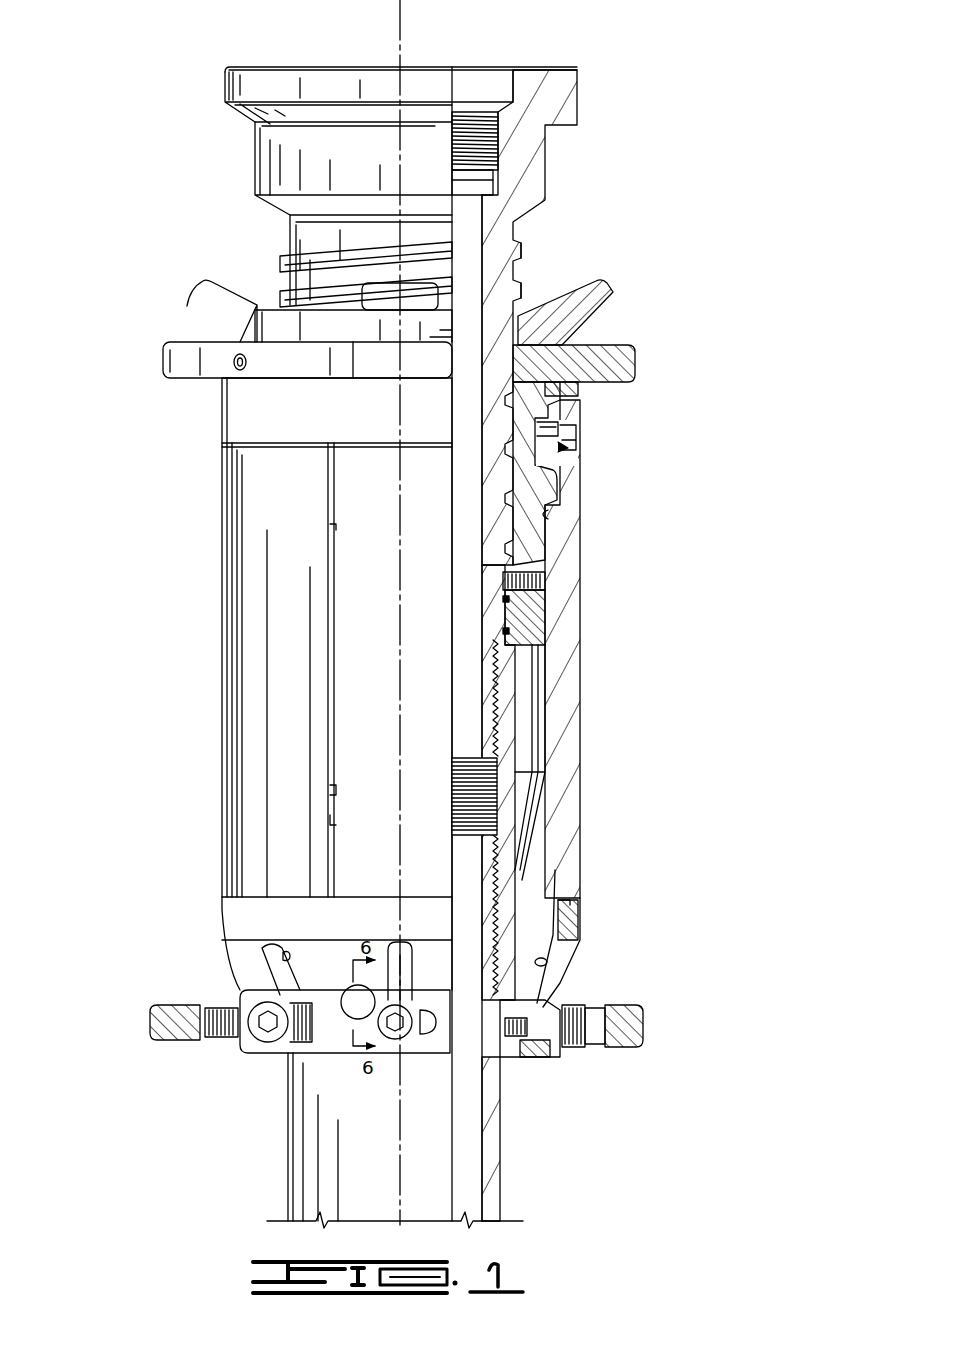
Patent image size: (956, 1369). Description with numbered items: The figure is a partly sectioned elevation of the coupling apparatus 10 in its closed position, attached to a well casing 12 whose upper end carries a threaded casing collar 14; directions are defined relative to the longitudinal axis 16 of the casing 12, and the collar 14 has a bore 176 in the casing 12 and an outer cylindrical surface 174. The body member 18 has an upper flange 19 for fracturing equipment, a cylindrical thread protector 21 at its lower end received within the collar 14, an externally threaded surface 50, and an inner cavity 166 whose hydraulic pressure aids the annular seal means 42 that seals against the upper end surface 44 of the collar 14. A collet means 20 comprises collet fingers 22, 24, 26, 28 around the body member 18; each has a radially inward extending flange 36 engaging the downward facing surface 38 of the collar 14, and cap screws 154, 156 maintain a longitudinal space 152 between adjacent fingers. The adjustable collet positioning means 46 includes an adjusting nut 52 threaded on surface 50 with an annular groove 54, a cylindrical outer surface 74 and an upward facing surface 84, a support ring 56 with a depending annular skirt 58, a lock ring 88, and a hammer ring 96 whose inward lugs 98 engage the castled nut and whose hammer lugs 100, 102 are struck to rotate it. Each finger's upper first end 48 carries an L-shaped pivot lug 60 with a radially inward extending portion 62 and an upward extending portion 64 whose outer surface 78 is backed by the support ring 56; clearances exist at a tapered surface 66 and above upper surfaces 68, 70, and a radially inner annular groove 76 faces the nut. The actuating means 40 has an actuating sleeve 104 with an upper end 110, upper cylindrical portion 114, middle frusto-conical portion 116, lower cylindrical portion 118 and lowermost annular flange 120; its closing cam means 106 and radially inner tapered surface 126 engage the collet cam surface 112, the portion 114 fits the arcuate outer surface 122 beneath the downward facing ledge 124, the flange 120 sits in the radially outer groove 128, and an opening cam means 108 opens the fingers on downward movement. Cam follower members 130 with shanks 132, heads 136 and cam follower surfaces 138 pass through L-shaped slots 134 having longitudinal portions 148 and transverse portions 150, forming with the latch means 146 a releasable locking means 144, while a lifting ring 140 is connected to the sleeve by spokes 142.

The coupling apparatus 10 is at (605, 213).
The well casing 12 is at (496, 1178).
The casing collar 14 is at (517, 756).
The longitudinal axis 16 is at (402, 20).
The body member 18 is at (535, 170).
The upper flange 19 is at (562, 82).
The collet means 20 is at (216, 547).
The thread protector 21 is at (503, 700).
The collet finger 22 is at (227, 600).
The collet finger 24 is at (262, 622).
The collet finger 26 is at (348, 640).
The collet finger 28 is at (565, 648).
The radially inward extending flange 36 is at (508, 1023).
The downward facing surface 38 is at (512, 1005).
The actuating means 40 is at (645, 916).
The annular seal means 42 is at (552, 617).
The upper end surface 44 is at (552, 603).
The adjustable collet positioning means 46 is at (648, 347).
The upper first end 48 is at (631, 473).
The externally threaded surface 50 is at (522, 268).
The adjusting nut 52 is at (530, 398).
The annular groove 54 is at (552, 430).
The support ring 56 is at (565, 390).
The annular skirt 58 is at (543, 450).
The pivot lug 60 is at (631, 473).
The radially inward extending portion 62 is at (560, 470).
The vertically upward extending portion 64 is at (545, 430).
The tapered surface 66 is at (540, 420).
The upper surface 68 is at (560, 420).
The upper surface 70 is at (562, 452).
The cylindrical outer surface 74 is at (575, 495).
The radially inner annular groove 76 is at (552, 515).
The radially outer surface 78 is at (566, 446).
The upward facing surface 84 is at (560, 478).
The lock ring 88 is at (600, 290).
The hammer ring 96 is at (597, 357).
The radially inward extending lug 98 is at (534, 345).
The hammer lug 100 is at (378, 372).
The hammer lug 102 is at (163, 352).
The actuating sleeve 104 is at (590, 911).
The closing cam means 106 is at (572, 868).
The opening cam means 108 is at (548, 965).
The upper end 110 is at (576, 886).
The collet cam surface 112 is at (546, 975).
The upper cylindrical portion 114 is at (578, 920).
The middle frusto-conical portion 116 is at (566, 948).
The lower cylindrical portion 118 is at (548, 1006).
The annular flange 120 is at (528, 1060).
The arcuate radially outer surface 122 is at (578, 932).
The downward facing ledge 124 is at (580, 897).
The radially inner tapered surface 126 is at (570, 960).
The radially outer groove 128 is at (540, 1060).
The cam follower member 130 is at (602, 1022).
The shank 132 is at (530, 1043).
The L-shaped slot 134 is at (405, 942).
The head 136 is at (292, 1042).
The cam follower surface 138 is at (562, 1042).
The lifting ring 140 is at (172, 1020).
The spoke 142 is at (617, 1012).
The releasable locking means 144 is at (189, 964).
The latch means 146 is at (350, 990).
The longitudinal portion 148 is at (274, 952).
The transverse portion 150 is at (428, 1052).
The longitudinal space 152 is at (336, 824).
The cap screw 154 is at (336, 530).
The cap screw 156 is at (336, 790).
The inner cavity 166 is at (463, 620).
The outer cylindrical surface 174 is at (548, 668).
The bore 176 is at (505, 862).